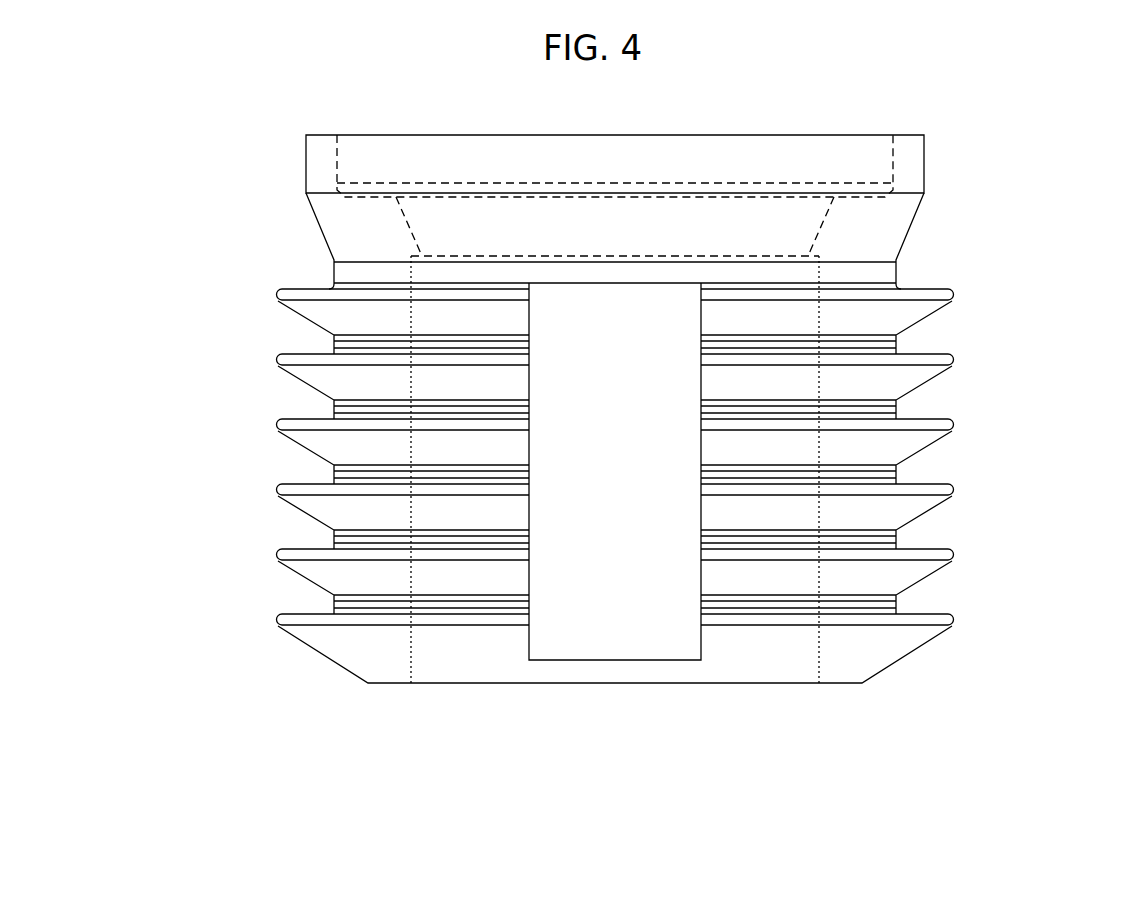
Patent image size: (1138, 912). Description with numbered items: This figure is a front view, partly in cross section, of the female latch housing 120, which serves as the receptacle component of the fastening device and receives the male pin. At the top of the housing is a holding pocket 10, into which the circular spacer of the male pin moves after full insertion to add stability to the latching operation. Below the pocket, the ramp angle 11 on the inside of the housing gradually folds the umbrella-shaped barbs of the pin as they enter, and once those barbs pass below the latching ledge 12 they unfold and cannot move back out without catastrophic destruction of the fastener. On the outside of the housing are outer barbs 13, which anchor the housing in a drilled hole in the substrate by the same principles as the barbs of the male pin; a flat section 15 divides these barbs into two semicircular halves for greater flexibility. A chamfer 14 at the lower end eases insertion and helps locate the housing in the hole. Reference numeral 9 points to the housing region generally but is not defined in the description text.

The anchoring insert 9 is at (305, 169).
The holding pocket 10 is at (895, 172).
The ramp angle 11 is at (822, 224).
The latching ledge 12 is at (820, 264).
The outer barbs 13 is at (955, 355).
The chamfer 14 is at (912, 655).
The flat section 15 is at (610, 614).
The female latch housing 120 is at (330, 375).